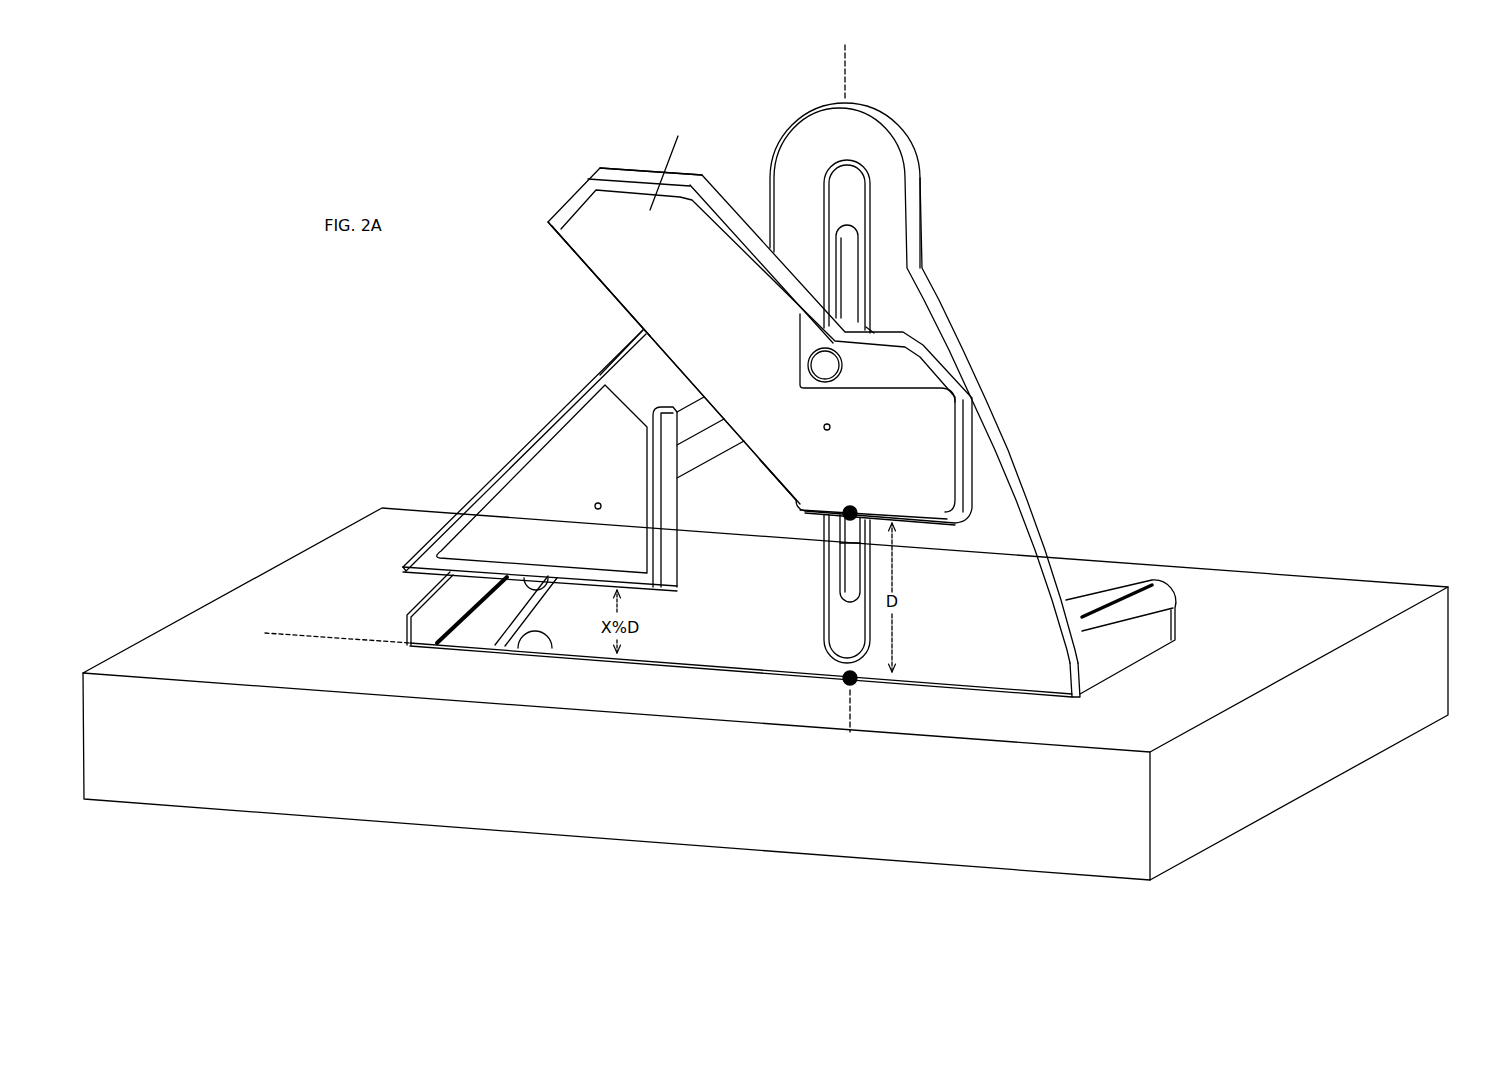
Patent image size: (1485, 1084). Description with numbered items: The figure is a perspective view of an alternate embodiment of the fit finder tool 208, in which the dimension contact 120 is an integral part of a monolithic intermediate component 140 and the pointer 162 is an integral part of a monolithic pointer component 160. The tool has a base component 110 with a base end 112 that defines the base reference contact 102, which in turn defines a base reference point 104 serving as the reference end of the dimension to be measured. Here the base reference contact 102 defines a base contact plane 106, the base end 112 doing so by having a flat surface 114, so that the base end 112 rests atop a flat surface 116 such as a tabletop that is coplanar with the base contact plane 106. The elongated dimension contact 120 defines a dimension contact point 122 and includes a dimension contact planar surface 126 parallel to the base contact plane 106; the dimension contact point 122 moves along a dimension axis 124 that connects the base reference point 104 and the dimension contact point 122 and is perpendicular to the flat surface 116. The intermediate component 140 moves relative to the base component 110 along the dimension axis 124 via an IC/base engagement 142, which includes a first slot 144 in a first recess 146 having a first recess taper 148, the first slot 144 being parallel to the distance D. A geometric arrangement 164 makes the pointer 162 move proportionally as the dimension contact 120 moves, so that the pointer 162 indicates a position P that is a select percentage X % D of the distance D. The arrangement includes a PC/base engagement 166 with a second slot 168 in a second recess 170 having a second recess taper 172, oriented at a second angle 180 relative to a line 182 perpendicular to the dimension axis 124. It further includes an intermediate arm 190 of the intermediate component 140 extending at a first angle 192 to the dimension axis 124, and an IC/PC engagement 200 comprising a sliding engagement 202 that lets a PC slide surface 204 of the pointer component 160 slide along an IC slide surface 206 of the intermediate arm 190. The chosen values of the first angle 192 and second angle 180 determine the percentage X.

The base reference contact 102 is at (741, 683).
The base reference point 104 is at (845, 683).
The base contact plane 106 is at (765, 694).
The flat surface 116 is at (1185, 712).
The base component 110 is at (925, 414).
The base end 112 is at (1040, 628).
The flat surface 114 is at (914, 687).
The dimension contact 120 is at (895, 545).
The dimension contact planar surface 126 is at (920, 525).
The dimension contact point 122 is at (853, 507).
The dimension axis 124 is at (852, 78).
The intermediate component 140 is at (865, 392).
The IC/base engagement 142 is at (870, 332).
The first slot 144 is at (852, 275).
The first recess 146 is at (909, 404).
The first recess taper 148 is at (851, 178).
The pointer component 160 is at (490, 396).
The pointer 162 is at (396, 540).
The geometric arrangement 164 is at (516, 222).
The PC/base engagement 166 is at (567, 460).
The second slot 168 is at (690, 425).
The second recess 170 is at (482, 631).
The second recess taper 172 is at (508, 642).
The second angle 180 is at (553, 632).
The line 182 is at (276, 634).
The intermediate arm 190 is at (672, 162).
The first angle 192 is at (756, 492).
The IC/PC engagement 200 is at (819, 346).
The sliding engagement 202 is at (819, 346).
The PC slide surface 204 is at (650, 352).
The IC slide surface 206 is at (590, 276).
The fit finder tool 208 is at (1098, 241).